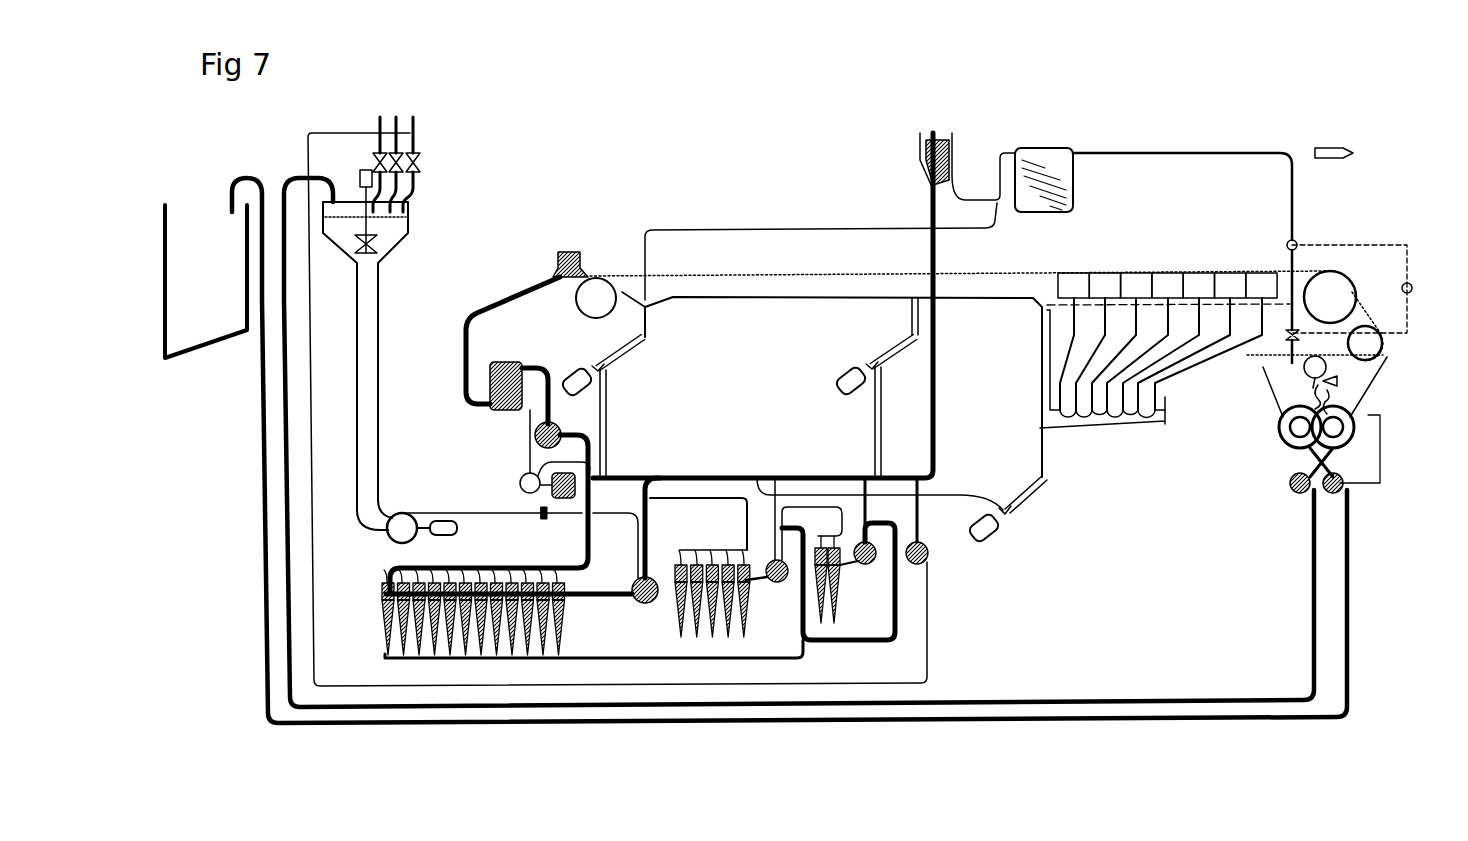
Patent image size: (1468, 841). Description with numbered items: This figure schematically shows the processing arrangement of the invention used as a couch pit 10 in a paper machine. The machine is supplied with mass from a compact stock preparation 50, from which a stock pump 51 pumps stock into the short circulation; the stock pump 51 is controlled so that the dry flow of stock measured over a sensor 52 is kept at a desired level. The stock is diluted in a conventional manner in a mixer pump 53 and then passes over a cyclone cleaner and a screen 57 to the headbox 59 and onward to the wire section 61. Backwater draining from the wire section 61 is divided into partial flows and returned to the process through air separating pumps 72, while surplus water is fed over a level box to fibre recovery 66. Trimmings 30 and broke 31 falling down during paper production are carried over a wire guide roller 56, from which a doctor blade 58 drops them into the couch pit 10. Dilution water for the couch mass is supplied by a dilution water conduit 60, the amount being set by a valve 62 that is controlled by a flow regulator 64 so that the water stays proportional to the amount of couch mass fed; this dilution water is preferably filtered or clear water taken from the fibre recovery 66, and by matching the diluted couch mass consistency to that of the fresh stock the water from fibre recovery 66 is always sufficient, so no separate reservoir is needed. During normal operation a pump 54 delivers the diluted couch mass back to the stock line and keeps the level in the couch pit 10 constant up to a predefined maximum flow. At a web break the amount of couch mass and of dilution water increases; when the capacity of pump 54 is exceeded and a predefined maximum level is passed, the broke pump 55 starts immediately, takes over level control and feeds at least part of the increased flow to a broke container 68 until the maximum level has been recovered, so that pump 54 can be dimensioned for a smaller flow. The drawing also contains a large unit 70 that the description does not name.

The couch pit 10 is at (1356, 437).
The trimmings 30 is at (1333, 388).
The broke 31 is at (1300, 404).
The compact stock preparation 50 is at (388, 323).
The stock pump 51 is at (512, 525).
The sensor 52 is at (528, 531).
The mixer pump 53 is at (659, 368).
The pump 54 is at (1290, 477).
The broke pump 55 is at (1427, 512).
The wire guide roller 56 is at (1326, 368).
The screen 57 is at (490, 459).
The doctor blade 58 is at (1338, 381).
The headbox 59 is at (541, 326).
The dilution water conduit 60 is at (1240, 255).
The wire section 61 is at (958, 251).
The valve 62 is at (1287, 337).
The flow regulator 64 is at (1411, 285).
The fibre recovery 66 is at (1065, 180).
The broke container 68 is at (206, 281).
The spray header 70 is at (832, 384).
The air separating pumps 72 is at (803, 431).